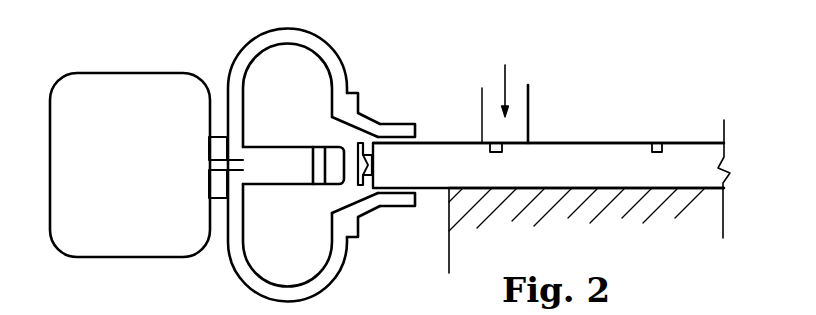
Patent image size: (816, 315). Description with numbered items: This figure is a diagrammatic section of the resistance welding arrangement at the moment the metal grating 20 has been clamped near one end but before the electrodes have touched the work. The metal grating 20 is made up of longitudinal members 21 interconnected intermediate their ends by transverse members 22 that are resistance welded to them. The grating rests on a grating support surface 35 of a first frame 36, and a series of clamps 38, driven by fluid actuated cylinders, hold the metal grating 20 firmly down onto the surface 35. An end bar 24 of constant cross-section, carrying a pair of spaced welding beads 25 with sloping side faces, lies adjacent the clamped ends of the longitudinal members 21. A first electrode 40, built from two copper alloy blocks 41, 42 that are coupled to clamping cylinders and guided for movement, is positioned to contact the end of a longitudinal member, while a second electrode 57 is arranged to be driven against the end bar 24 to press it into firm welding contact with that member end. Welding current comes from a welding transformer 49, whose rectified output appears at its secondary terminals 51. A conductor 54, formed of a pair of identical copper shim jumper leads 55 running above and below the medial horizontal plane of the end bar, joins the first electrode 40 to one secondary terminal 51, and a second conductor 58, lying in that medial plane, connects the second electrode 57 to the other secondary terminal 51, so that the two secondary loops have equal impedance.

The metal grating 20 is at (607, 131).
The longitudinal members 21 is at (552, 149).
The transverse members 22 is at (658, 143).
The end bar 24 is at (366, 168).
The welding beads 25 is at (373, 156).
The grating support surface 35 is at (676, 176).
The first frame 36 is at (636, 227).
The clamps 38 is at (522, 101).
The first electrode 40 is at (374, 97).
The copper alloy block 41 is at (407, 127).
The copper alloy block 42 is at (398, 196).
The welding transformer 49 is at (133, 160).
The secondary terminals 51 is at (220, 137).
The conductor 54 is at (338, 22).
The jumper leads 55 is at (258, 51).
The second electrode 57 is at (337, 150).
The second conductor 58 is at (253, 147).